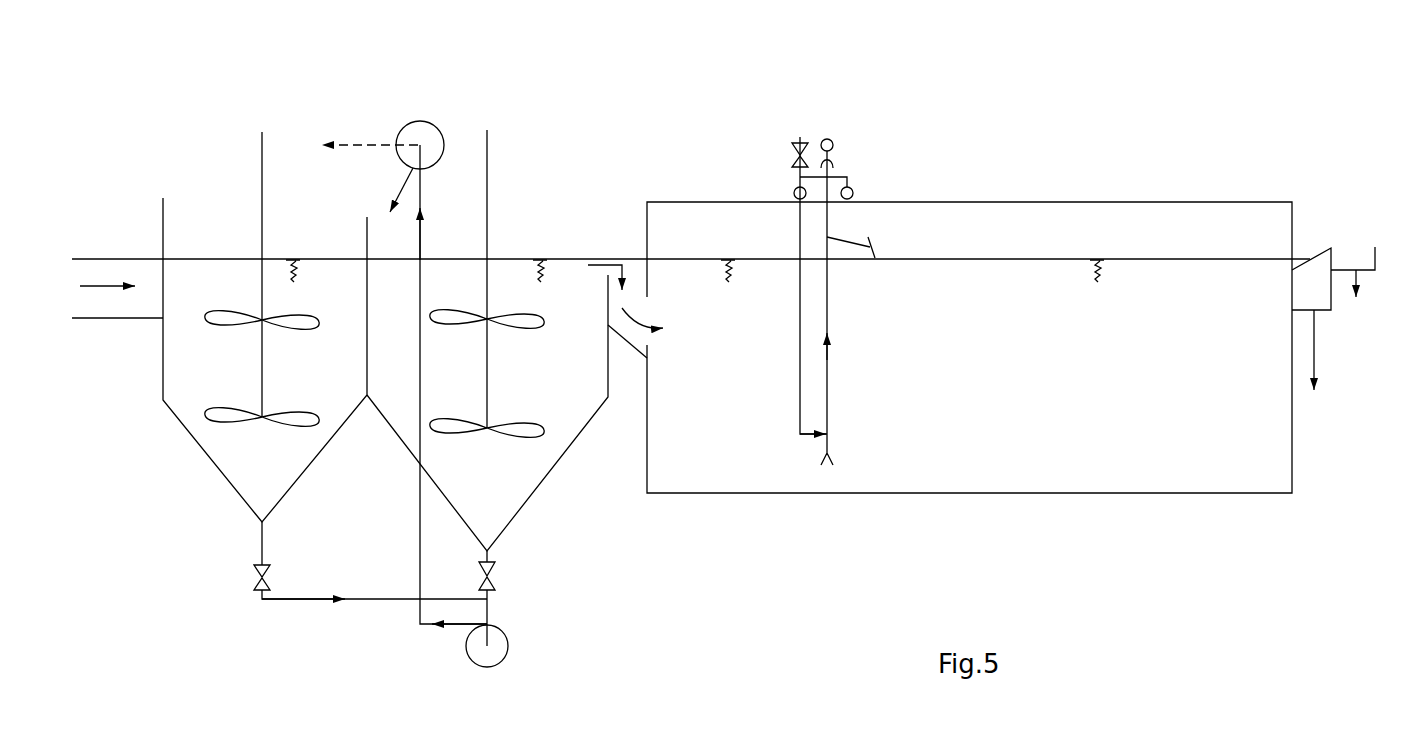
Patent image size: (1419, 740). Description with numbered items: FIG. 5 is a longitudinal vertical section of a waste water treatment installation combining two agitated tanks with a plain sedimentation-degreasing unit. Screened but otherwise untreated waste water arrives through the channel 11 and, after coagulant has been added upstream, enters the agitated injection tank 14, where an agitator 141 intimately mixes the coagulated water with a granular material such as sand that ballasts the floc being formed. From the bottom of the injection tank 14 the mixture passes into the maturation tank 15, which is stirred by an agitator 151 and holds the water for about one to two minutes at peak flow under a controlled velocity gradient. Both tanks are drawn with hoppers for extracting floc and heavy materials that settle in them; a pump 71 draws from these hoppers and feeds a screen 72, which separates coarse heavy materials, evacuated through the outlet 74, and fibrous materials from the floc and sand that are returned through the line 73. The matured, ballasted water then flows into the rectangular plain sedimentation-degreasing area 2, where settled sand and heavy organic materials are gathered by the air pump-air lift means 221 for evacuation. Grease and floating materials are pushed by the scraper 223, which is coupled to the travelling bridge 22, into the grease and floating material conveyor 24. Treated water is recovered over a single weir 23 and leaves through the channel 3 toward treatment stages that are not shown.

The channel 11 is at (115, 320).
The injection tank 14 is at (185, 379).
The agitator 141 is at (293, 320).
The maturation tank 15 is at (520, 468).
The agitator 151 is at (512, 430).
The pump 71 is at (507, 635).
The screen 72 is at (443, 133).
The line 73 is at (400, 183).
The outlet 74 is at (372, 147).
The plain sedimentation-degreasing area 2 is at (1081, 357).
The travelling bridge 22 is at (840, 175).
The air pump-air lift means 221 is at (828, 388).
The scraper 223 is at (853, 255).
The weir 23 is at (1300, 290).
The grease and floating material conveyor 24 is at (1348, 253).
The channel 3 is at (1315, 357).